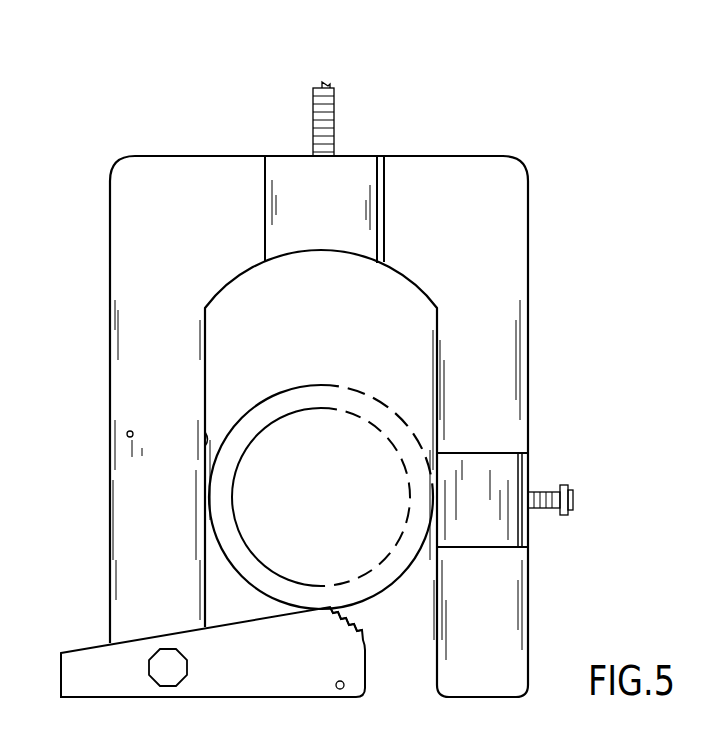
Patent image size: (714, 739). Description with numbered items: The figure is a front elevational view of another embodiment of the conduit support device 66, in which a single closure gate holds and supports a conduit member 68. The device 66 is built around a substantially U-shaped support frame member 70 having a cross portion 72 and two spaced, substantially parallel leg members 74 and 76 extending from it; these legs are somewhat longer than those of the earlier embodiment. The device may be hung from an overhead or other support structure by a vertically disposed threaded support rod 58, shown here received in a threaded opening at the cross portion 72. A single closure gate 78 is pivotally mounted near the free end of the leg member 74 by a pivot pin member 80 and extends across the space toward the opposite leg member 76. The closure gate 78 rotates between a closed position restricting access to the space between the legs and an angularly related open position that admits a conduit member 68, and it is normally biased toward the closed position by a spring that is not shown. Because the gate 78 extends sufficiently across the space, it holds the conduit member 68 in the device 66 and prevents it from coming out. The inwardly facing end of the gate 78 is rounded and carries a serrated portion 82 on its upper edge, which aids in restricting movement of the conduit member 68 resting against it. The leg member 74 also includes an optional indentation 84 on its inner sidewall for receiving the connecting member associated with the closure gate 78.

The threaded support rod 58 is at (336, 108).
The conduit support device 66 is at (330, 74).
The conduit member 68 is at (392, 411).
The support frame member 70 is at (186, 156).
The cross portion 72 is at (458, 182).
The leg member 74 is at (110, 352).
The leg member 76 is at (528, 352).
The closure gate 78 is at (99, 697).
The pivot pin member 80 is at (158, 660).
The serrated portion 82 is at (362, 625).
The indentation 84 is at (200, 447).